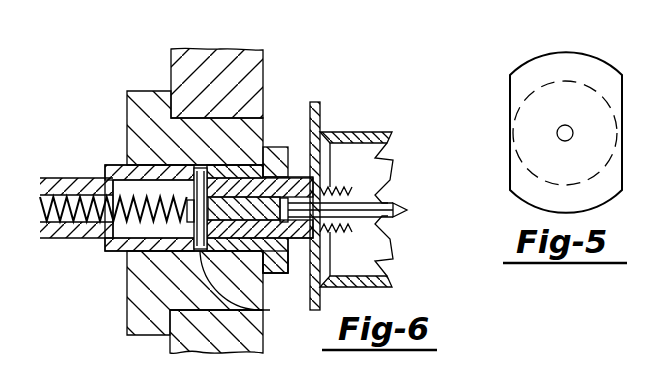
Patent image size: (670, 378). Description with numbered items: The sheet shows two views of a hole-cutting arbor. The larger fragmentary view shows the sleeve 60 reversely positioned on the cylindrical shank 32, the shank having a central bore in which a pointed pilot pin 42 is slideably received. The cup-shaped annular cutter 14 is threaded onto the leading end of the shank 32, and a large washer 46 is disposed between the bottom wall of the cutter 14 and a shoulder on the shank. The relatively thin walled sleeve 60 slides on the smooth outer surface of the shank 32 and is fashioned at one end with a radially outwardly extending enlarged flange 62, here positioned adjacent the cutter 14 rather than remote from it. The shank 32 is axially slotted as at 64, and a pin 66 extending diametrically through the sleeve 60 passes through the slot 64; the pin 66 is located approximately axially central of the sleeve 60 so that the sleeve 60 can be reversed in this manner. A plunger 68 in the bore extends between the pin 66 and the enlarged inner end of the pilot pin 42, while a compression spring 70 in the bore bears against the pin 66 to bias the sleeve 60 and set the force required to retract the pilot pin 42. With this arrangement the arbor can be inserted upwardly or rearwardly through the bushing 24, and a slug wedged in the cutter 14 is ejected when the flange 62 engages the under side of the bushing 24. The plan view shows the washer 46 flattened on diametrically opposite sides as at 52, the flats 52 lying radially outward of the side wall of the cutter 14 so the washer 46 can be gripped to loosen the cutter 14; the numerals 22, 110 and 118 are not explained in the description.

In FIG. 6, the cup-shaped annular cutter 14 is at (367, 128).
In FIG. 5, the cup-shaped annular cutter 14 is at (546, 80).
In FIG. 6, the upper block 22 is at (257, 83).
In FIG. 6, the bushing 24 is at (136, 312).
In FIG. 6, the cylindrical shank 32 is at (50, 183).
In FIG. 6, the pilot pin 42 is at (367, 208).
In FIG. 6, the washer 46 is at (317, 110).
In FIG. 5, the washer 46 is at (590, 63).
In FIG. 5, the flattened sides 52 is at (508, 115).
In FIG. 6, the sleeve 60 is at (115, 165).
In FIG. 6, the flange 62 is at (273, 147).
In FIG. 6, the slot 64 is at (133, 228).
In FIG. 6, the pin 66 is at (237, 322).
In FIG. 6, the plunger 68 is at (263, 278).
In FIG. 6, the compression spring 70 is at (90, 182).
In FIG. 5, the member 110 is at (658, 111).
In FIG. 5, the member 118 is at (658, 196).